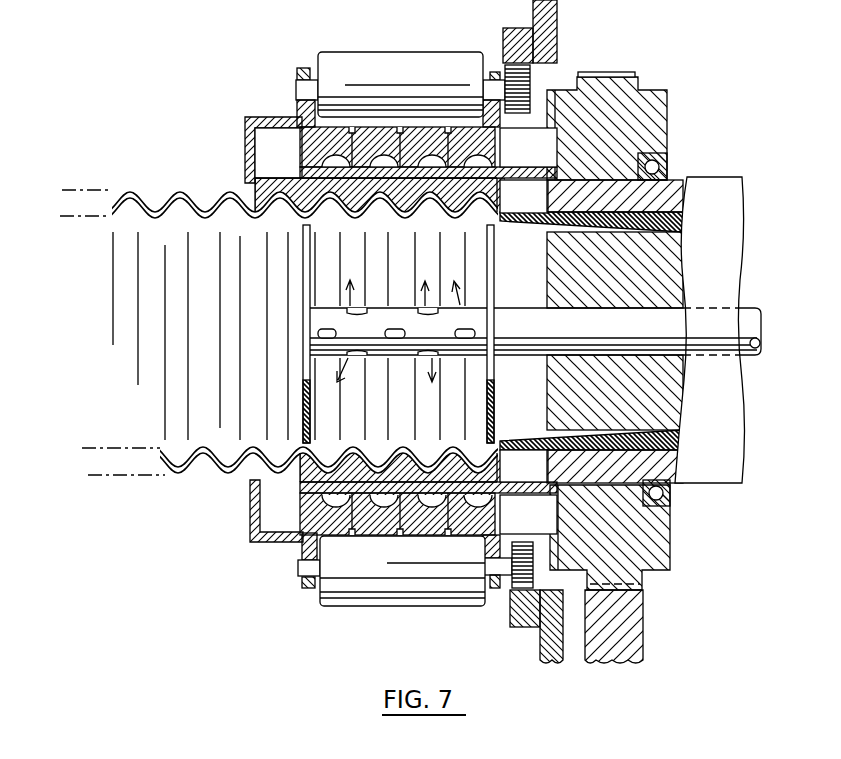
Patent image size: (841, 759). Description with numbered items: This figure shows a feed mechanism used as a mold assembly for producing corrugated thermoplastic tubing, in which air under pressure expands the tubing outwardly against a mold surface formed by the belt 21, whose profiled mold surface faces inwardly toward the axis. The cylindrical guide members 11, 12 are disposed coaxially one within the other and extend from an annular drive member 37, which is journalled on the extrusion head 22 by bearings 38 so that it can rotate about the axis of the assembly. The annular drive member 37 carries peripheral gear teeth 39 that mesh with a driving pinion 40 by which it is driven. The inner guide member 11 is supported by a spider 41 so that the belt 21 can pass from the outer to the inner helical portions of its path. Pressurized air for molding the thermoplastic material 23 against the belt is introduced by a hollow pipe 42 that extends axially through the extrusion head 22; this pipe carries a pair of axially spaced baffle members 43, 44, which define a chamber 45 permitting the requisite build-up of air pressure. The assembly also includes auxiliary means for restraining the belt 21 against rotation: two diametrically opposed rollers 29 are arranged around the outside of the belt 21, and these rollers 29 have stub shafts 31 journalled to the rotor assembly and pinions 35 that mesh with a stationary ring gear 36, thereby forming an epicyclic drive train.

The inner guide member 11 is at (305, 488).
The outer guide member 12 is at (250, 530).
The belt 21 is at (283, 147).
The extrusion head 22 is at (708, 470).
The thermoplastic material 23 is at (134, 196).
The rollers 29 is at (385, 75).
The stub shafts 31 is at (300, 82).
The pinions 35 is at (505, 80).
The stationary ring gear 36 is at (510, 30).
The annular drive member 37 is at (668, 122).
The bearings 38 is at (668, 164).
The peripheral gear teeth 39 is at (608, 72).
The driving pinion 40 is at (640, 630).
The spider 41 is at (524, 177).
The hollow pipe 42 is at (683, 352).
The baffle member 43 is at (495, 406).
The baffle member 44 is at (305, 268).
The chamber 45 is at (390, 343).